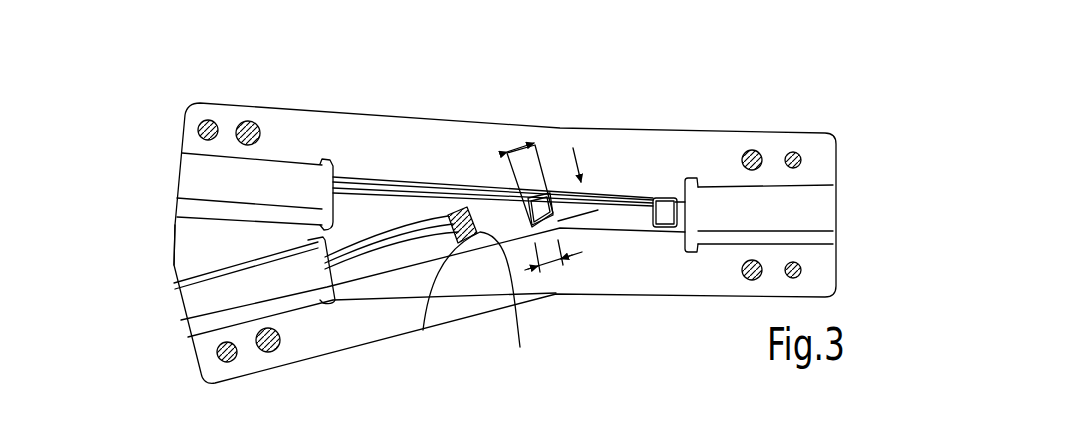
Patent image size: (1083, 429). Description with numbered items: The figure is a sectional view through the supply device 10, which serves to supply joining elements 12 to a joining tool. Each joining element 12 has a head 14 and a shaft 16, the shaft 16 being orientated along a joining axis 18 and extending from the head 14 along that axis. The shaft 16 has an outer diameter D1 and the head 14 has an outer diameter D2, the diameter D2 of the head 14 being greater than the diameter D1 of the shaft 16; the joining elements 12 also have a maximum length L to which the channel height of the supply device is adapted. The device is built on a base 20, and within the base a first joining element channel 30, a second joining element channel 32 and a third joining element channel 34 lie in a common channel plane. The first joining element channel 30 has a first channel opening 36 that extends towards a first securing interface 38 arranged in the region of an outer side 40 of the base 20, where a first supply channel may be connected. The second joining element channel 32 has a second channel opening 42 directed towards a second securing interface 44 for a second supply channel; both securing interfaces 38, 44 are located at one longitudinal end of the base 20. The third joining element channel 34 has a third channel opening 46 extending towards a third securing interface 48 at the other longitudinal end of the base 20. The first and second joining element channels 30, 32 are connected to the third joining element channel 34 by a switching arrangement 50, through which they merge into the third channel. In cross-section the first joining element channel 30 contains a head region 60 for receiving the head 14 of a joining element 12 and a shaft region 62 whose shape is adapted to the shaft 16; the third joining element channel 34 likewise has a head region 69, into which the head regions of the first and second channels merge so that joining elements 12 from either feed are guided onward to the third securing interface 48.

The supply device 10 is at (848, 112).
The joining element 12 is at (445, 238).
The head 14 is at (477, 270).
The shaft 16 is at (479, 302).
The joining axis 18 is at (445, 183).
The base 20 is at (303, 110).
The first joining element channel 30 is at (400, 205).
The second joining element channel 32 is at (368, 265).
The third joining element channel 34 is at (623, 217).
The first channel opening 36 is at (325, 196).
The first securing interface 38 is at (203, 190).
The outer side 40 is at (172, 230).
The second channel opening 42 is at (208, 287).
The second securing interface 44 is at (170, 288).
The third channel opening 46 is at (700, 211).
The third securing interface 48 is at (810, 203).
The switching arrangement 50 is at (550, 125).
The head region 60 is at (360, 200).
The shaft region 62 is at (392, 203).
The head region 69 is at (640, 197).
The outer diameter of the shaft D1 is at (555, 275).
The outer diameter of the head D2 is at (507, 150).
The maximum length L is at (583, 168).